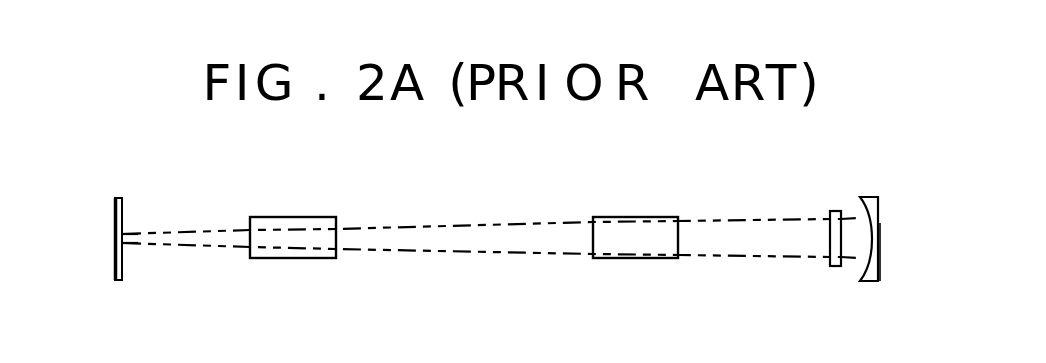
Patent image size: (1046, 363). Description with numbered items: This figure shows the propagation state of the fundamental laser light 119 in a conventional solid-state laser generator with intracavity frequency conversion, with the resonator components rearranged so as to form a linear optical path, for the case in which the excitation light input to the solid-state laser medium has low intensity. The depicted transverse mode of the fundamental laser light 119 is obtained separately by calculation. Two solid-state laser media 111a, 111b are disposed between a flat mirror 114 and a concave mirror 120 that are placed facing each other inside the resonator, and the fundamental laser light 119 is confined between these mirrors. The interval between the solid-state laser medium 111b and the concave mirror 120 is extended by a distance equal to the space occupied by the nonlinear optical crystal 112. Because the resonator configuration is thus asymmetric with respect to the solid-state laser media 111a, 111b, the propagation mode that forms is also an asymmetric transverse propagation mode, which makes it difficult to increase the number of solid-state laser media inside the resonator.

The flat mirror 114 is at (118, 281).
The solid-state laser medium 111a is at (283, 217).
The solid-state laser medium 111b is at (632, 217).
The nonlinear optical crystal 112 is at (832, 211).
The concave mirror 120 is at (871, 282).
The fundamental laser light 119 is at (440, 253).